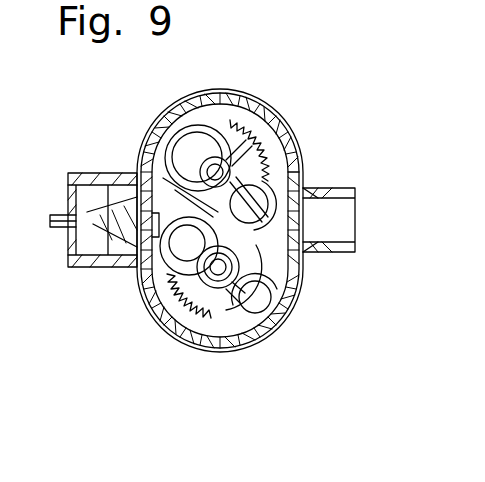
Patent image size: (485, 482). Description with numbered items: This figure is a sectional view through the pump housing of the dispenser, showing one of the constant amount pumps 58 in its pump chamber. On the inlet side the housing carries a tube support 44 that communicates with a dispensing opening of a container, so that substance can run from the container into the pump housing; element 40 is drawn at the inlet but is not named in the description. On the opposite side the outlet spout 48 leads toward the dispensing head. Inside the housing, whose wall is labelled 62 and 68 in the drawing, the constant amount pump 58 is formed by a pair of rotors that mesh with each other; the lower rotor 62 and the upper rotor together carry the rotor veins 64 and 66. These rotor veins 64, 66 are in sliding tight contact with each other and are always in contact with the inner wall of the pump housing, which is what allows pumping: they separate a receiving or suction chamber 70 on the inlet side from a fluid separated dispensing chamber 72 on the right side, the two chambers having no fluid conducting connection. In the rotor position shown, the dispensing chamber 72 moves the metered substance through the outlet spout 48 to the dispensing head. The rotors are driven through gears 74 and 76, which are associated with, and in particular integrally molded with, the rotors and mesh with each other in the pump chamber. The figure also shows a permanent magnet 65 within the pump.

The inlet tube 40 is at (70, 227).
The tube support 44 is at (83, 175).
The outlet spout 48 is at (322, 194).
The constant amount pump 58 is at (233, 128).
The rotor 62 is at (170, 295).
The rotor vein 64 is at (270, 185).
The permanent magnet 65 is at (257, 293).
The rotor vein 66 is at (255, 290).
The housing shell 68 is at (225, 333).
The receiving chamber or suction chamber 70 is at (157, 277).
The dispensing chamber 72 is at (258, 184).
The gear 74 is at (273, 158).
The gear 76 is at (202, 308).